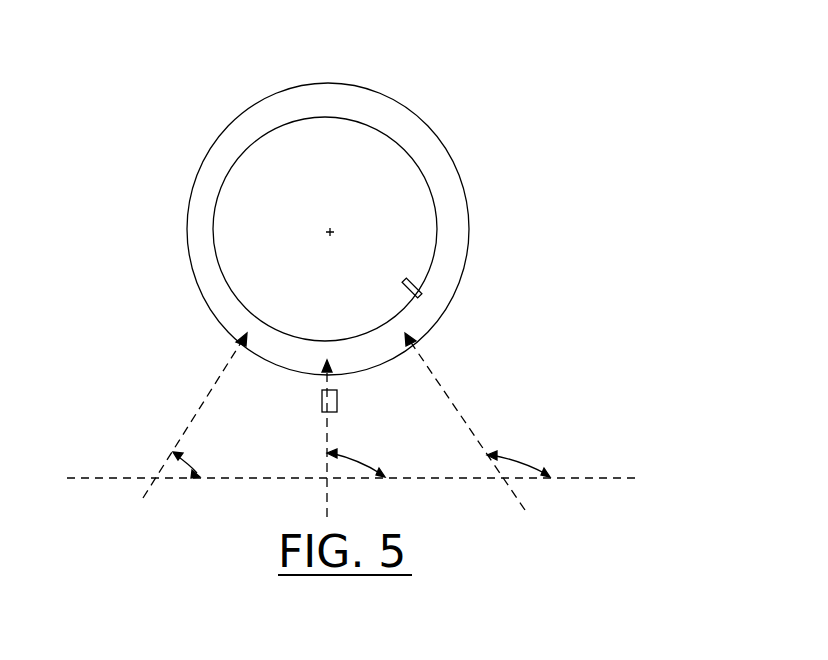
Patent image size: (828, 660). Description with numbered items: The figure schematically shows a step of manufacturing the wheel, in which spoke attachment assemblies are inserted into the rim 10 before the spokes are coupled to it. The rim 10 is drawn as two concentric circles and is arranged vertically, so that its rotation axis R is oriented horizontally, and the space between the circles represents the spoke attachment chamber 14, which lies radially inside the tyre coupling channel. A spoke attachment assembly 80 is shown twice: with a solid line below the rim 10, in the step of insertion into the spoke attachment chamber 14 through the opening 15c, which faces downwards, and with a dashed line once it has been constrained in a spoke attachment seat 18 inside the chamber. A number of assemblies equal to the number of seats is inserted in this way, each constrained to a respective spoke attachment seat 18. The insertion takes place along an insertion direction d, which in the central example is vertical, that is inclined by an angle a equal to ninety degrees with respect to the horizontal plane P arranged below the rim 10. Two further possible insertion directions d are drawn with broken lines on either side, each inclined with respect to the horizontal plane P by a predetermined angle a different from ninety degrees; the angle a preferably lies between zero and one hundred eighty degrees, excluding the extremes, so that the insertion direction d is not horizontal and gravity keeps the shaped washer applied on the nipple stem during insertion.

The rim 10 is at (478, 190).
The spoke attachment chamber 14 is at (445, 243).
The spoke attachment seat 18 is at (405, 299).
The spoke attachment assembly 80 is at (407, 280).
The opening 15c is at (327, 378).
The rotation axis R is at (330, 232).
The horizontal plane P is at (595, 477).
The insertion direction d is at (180, 437).
The angle α a is at (362, 456).